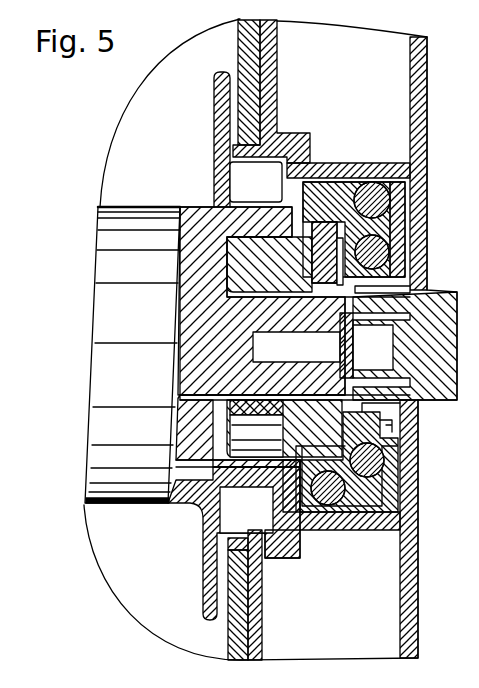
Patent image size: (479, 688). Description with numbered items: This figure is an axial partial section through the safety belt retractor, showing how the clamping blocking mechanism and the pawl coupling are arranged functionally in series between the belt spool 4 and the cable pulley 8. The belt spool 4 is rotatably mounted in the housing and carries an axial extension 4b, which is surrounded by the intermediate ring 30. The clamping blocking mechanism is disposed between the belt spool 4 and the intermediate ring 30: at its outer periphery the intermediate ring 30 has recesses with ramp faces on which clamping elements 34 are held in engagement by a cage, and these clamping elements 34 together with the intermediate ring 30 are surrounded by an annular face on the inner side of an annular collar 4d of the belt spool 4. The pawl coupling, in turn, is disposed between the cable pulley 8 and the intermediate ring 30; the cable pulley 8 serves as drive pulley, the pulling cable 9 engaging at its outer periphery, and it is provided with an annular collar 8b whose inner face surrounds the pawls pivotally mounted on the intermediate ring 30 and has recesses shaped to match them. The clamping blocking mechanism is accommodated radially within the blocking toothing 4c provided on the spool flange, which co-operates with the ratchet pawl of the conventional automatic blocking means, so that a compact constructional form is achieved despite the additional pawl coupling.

The belt spool 4 is at (130, 228).
The intermediate ring 30 is at (270, 346).
The annular collar 8b is at (333, 195).
The axial extension 4b is at (395, 289).
The cable pulley 8 is at (397, 434).
The pulling cable 9 is at (393, 462).
The clamping elements 34 is at (192, 504).
The annular collar 4d is at (221, 517).
The blocking toothing 4c is at (272, 535).